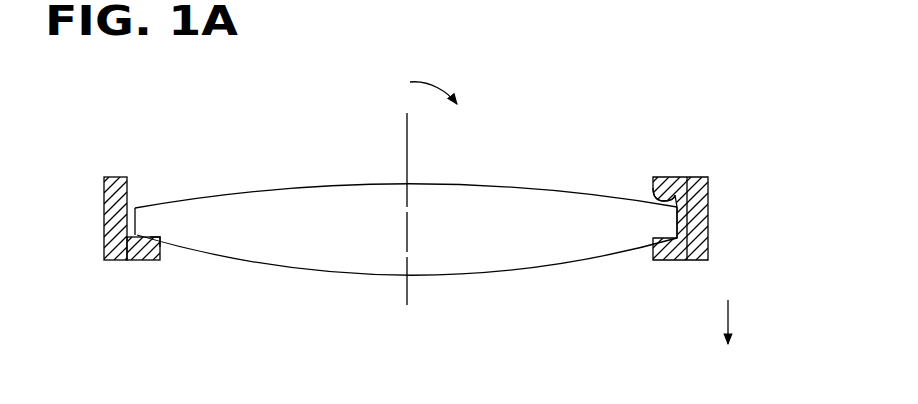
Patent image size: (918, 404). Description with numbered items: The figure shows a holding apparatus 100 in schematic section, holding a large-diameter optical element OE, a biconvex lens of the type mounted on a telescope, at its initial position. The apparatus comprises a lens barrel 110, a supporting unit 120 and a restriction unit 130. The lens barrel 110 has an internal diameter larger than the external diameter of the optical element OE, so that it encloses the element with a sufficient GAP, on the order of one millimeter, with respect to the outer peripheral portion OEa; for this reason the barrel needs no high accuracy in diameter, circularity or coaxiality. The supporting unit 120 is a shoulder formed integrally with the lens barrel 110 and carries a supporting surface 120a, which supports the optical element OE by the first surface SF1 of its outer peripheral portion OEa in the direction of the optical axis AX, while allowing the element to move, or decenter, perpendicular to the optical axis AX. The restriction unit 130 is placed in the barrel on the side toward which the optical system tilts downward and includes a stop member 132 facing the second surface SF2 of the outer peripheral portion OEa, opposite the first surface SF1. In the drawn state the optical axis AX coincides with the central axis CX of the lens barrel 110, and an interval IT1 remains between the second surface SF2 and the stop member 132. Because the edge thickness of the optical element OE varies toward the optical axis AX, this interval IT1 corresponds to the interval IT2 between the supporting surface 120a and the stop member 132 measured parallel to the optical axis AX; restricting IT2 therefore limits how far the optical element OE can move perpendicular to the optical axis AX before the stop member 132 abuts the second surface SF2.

The holding apparatus 100 is at (382, 57).
The lens barrel 110 is at (116, 179).
The supporting unit 120 is at (153, 260).
The supporting surface 120a is at (158, 240).
The restriction unit 130 is at (715, 160).
The stop member 132 is at (660, 177).
The optical element OE is at (480, 270).
The outer peripheral portion OEa is at (240, 143).
The first surface SF1 is at (623, 253).
The second surface SF2 is at (592, 194).
The central axis CX is at (407, 132).
The optical axis AX is at (407, 172).
The interval IT1 is at (677, 208).
The interval IT2 is at (677, 202).
The gap GAP is at (127, 261).